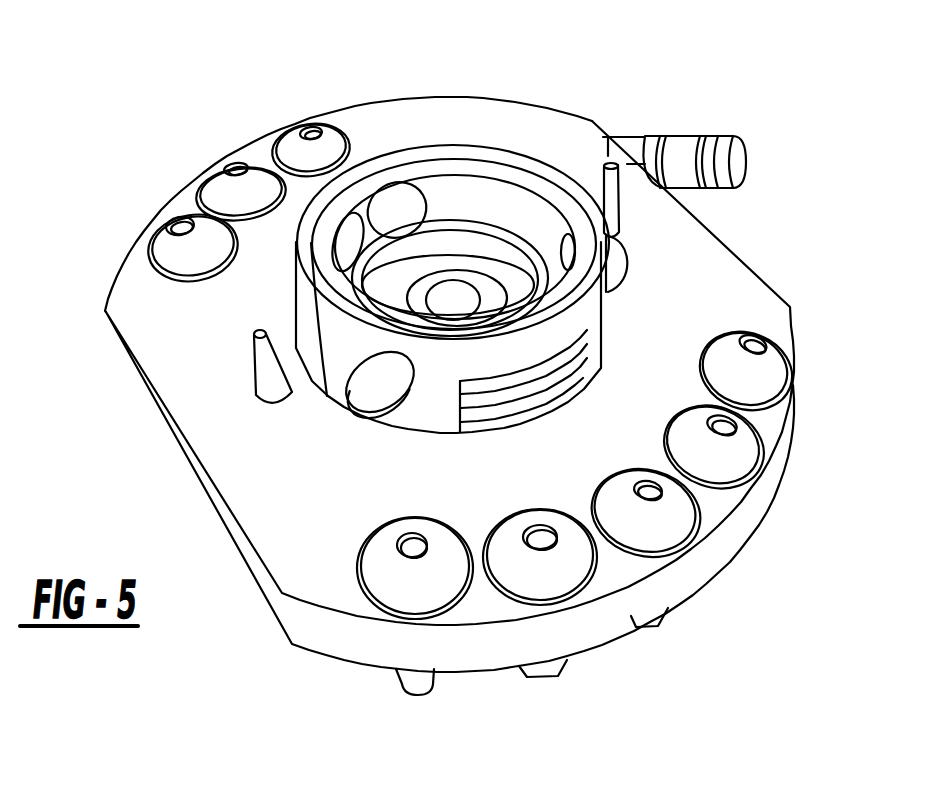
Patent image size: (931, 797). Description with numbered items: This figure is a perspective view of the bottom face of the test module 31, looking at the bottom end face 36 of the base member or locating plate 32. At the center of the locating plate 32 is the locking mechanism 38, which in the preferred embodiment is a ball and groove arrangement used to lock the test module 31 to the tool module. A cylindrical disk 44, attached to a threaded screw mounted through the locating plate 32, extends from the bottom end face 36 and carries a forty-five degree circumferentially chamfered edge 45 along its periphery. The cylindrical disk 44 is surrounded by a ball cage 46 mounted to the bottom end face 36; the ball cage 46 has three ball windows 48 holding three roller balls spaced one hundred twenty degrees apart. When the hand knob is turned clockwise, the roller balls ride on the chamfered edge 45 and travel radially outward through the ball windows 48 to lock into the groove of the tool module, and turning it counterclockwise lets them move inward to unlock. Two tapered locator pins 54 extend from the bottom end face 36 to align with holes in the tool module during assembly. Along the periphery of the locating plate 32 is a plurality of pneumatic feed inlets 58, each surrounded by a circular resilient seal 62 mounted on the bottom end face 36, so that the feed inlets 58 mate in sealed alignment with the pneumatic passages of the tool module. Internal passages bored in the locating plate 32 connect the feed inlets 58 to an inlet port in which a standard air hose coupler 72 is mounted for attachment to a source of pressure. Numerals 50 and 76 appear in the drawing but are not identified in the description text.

The test module 31 is at (757, 227).
The locating plate 32 is at (763, 280).
The bottom end face 36 is at (319, 519).
The locking mechanism 38 is at (498, 110).
The cylindrical disk 44 is at (603, 312).
The chamfered edge 45 is at (347, 267).
The ball cage 46 is at (468, 249).
The ball window 48 is at (377, 373).
The port boss 50 is at (630, 277).
The tapered locator pin 54 is at (256, 372).
The pneumatic feed inlet 58 is at (180, 225).
The circular resilient seal 62 is at (192, 258).
The air hose coupler 72 is at (707, 133).
The cover 76 is at (273, 9).